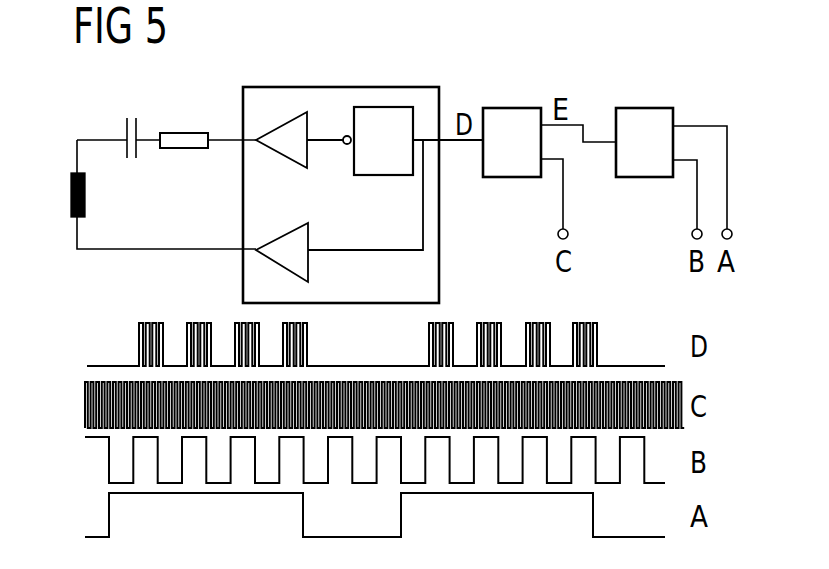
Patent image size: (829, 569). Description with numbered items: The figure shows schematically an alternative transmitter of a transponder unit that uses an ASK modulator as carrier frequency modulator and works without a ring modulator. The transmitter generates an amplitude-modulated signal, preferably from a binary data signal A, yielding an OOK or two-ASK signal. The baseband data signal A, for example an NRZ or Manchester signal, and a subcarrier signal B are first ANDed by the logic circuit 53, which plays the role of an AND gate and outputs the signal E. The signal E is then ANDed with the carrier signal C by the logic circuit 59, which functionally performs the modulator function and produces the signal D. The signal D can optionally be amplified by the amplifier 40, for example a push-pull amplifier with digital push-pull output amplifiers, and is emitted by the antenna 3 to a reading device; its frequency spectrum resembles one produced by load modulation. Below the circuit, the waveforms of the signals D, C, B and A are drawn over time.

The antenna 3 is at (85, 193).
The amplifier 40 is at (348, 87).
The logic circuit 59 is at (512, 108).
The logic circuit 53 is at (641, 108).